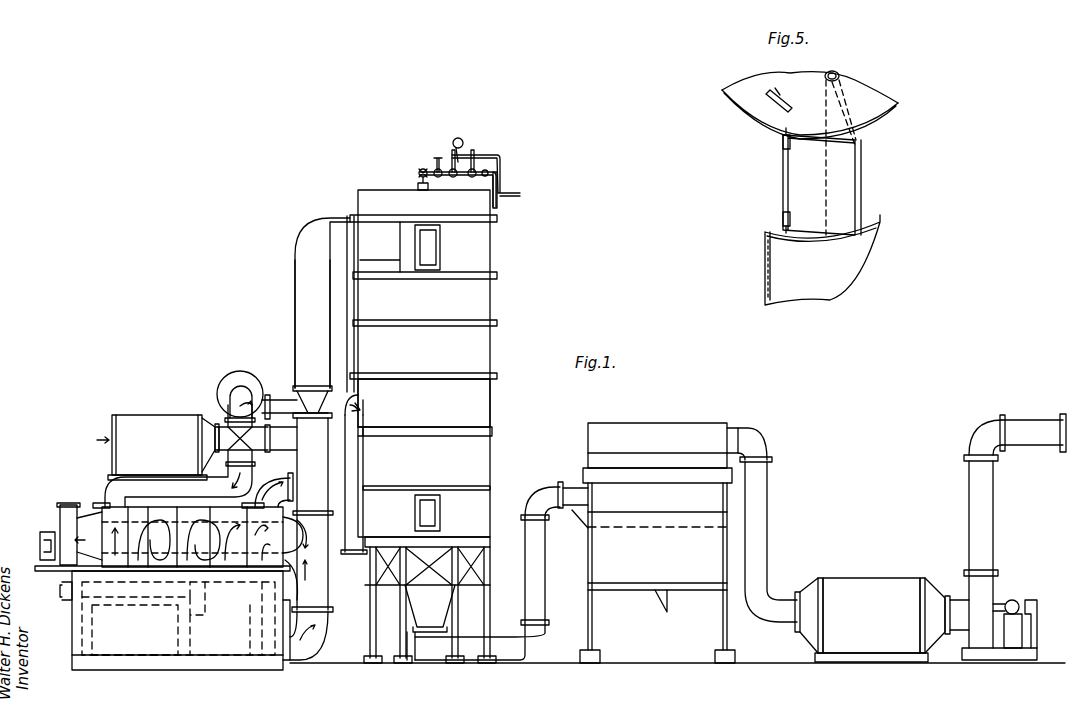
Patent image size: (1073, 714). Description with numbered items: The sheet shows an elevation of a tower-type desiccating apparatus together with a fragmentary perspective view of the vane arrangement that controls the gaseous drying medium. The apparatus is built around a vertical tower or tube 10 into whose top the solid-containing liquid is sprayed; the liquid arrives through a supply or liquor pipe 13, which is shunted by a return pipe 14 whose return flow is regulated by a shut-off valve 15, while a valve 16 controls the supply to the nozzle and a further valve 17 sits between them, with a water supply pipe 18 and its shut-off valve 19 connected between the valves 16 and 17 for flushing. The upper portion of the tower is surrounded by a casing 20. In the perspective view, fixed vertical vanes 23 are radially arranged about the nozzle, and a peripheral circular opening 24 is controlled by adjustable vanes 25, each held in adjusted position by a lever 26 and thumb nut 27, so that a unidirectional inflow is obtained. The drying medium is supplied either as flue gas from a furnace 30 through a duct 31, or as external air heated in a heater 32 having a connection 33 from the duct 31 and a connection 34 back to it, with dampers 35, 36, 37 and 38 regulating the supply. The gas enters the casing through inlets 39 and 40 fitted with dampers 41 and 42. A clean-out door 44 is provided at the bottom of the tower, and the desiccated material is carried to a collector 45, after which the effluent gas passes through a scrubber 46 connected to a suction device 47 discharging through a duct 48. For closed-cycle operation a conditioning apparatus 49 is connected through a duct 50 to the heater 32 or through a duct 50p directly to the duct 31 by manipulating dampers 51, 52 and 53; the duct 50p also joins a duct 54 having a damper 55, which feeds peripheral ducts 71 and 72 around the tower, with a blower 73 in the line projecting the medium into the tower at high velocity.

In FIG. 1, the vertical tower or tube 10 is at (472, 400).
In FIG. 1, the supply or liquor pipe 13 is at (419, 175).
In FIG. 5, the supply or liquor pipe 13 is at (842, 78).
In FIG. 1, the return pipe 14 is at (496, 205).
In FIG. 1, the controlling or shut-off valve 15 is at (480, 176).
In FIG. 1, the valve 16 is at (427, 170).
In FIG. 1, the valve 17 is at (455, 176).
In FIG. 1, the water supply pipe 18 is at (441, 168).
In FIG. 1, the shut-off valve 19 is at (440, 165).
In FIG. 1, the casing 20 is at (485, 252).
In FIG. 5, the fixed vertical vanes 23 is at (862, 172).
In FIG. 5, the peripheral and circular opening 24 is at (862, 138).
In FIG. 5, the adjustable vanes 25 is at (848, 203).
In FIG. 5, the lever 26 is at (785, 122).
In FIG. 5, the thumb nut 27 is at (772, 99).
In FIG. 1, the furnace 30 is at (235, 650).
In FIG. 1, the duct 31 is at (320, 594).
In FIG. 1, the heater 32 is at (130, 508).
In FIG. 1, the connection 33 is at (312, 552).
In FIG. 1, the connection 34 is at (266, 508).
In FIG. 1, the controlling damper 35 is at (330, 614).
In FIG. 1, the controlling damper 36 is at (293, 588).
In FIG. 1, the controlling damper 37 is at (338, 514).
In FIG. 1, the controlling damper 38 is at (294, 500).
In FIG. 1, the inlet 39 is at (346, 351).
In FIG. 1, the inlet 40 is at (348, 218).
In FIG. 1, the damper 41 is at (359, 400).
In FIG. 1, the damper 42 is at (352, 283).
In FIG. 1, the clean-out door 44 is at (434, 523).
In FIG. 1, the collector 45 is at (602, 552).
In FIG. 1, the scrubber 46 is at (860, 578).
In FIG. 1, the suction device 47 is at (1000, 602).
In FIG. 1, the duct 48 is at (1048, 436).
In FIG. 1, the conditioning apparatus 49 is at (165, 425).
In FIG. 1, the duct 50 is at (170, 484).
In FIG. 1, the duct 50p is at (290, 438).
In FIG. 1, the damper 51 is at (230, 450).
In FIG. 1, the damper 52 is at (240, 470).
In FIG. 1, the damper 53 is at (271, 449).
In FIG. 1, the duct 54 is at (365, 467).
In FIG. 1, the damper 55 is at (259, 404).
In FIG. 1, the peripheral duct 71 is at (485, 437).
In FIG. 1, the peripheral duct 72 is at (482, 537).
In FIG. 1, the blower 73 is at (236, 372).